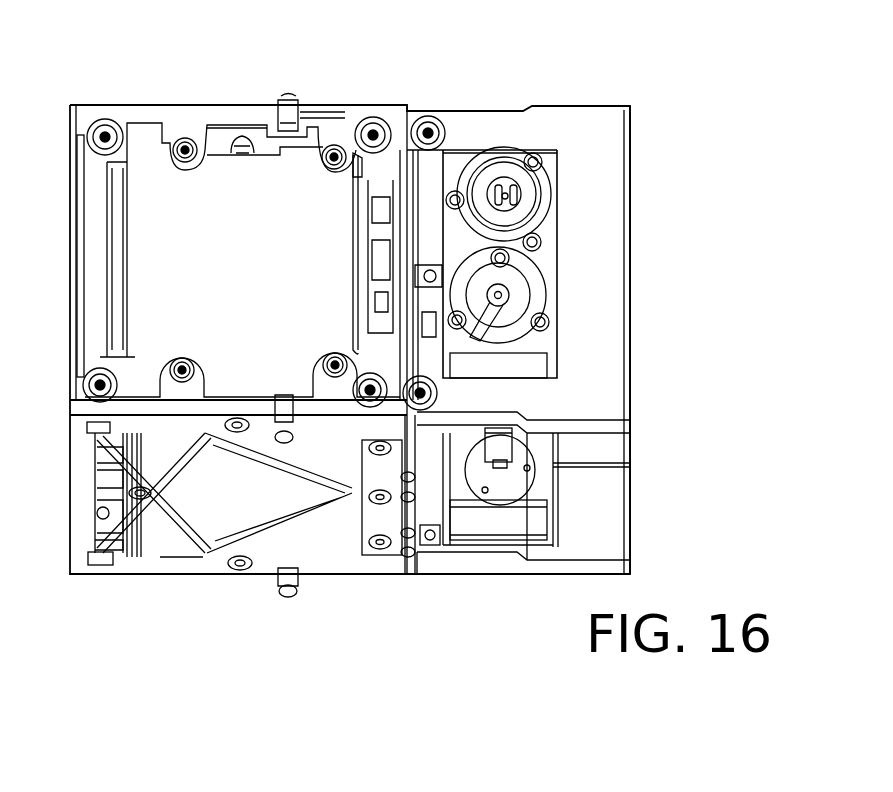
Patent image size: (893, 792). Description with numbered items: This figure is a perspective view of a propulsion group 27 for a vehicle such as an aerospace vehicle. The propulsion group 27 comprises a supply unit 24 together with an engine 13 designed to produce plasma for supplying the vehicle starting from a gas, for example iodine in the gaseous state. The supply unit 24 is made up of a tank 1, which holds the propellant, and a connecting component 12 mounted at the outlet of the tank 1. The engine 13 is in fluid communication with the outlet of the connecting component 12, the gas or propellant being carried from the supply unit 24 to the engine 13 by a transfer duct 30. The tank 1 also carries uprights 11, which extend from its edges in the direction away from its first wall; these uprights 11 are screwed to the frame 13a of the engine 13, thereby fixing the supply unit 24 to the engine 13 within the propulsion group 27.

The tank 1 is at (586, 125).
The uprights 11 is at (452, 125).
The connecting component 12 is at (463, 162).
The engine 13 is at (218, 168).
The frame 13a is at (331, 118).
The supply unit 24 is at (518, 152).
The propulsion group 27 is at (632, 180).
The transfer duct 30 is at (435, 307).